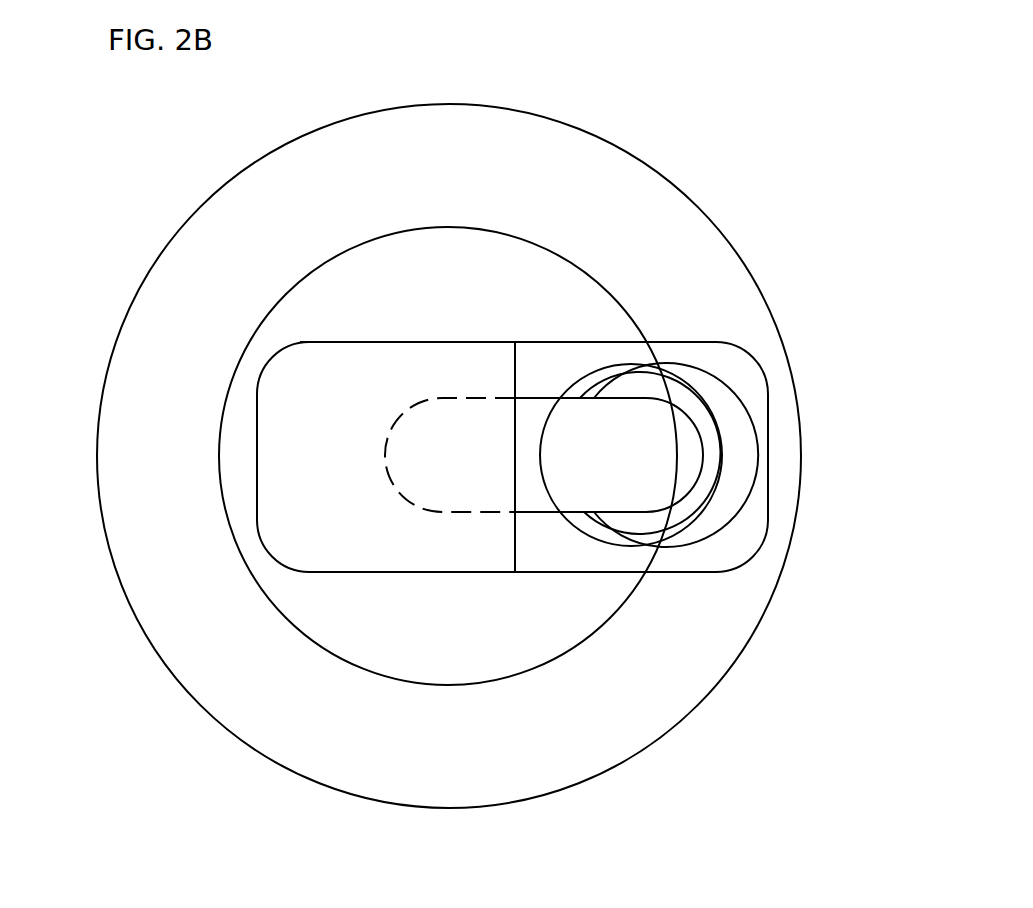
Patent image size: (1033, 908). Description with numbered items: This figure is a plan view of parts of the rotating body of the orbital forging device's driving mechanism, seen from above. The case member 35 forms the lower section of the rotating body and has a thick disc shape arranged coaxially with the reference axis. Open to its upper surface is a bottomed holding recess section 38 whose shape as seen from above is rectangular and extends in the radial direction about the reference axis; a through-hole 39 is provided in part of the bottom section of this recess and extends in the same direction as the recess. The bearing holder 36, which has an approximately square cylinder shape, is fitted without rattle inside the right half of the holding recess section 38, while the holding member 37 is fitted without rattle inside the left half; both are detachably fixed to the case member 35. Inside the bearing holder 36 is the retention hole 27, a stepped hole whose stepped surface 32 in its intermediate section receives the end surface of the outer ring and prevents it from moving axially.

The retention hole 27 is at (545, 437).
The stepped surface 32 is at (708, 434).
The case member 35 is at (207, 293).
The bearing holder 36 is at (720, 545).
The holding member 37 is at (325, 465).
The holding recess section 38 is at (395, 343).
The through-hole 39 is at (590, 512).